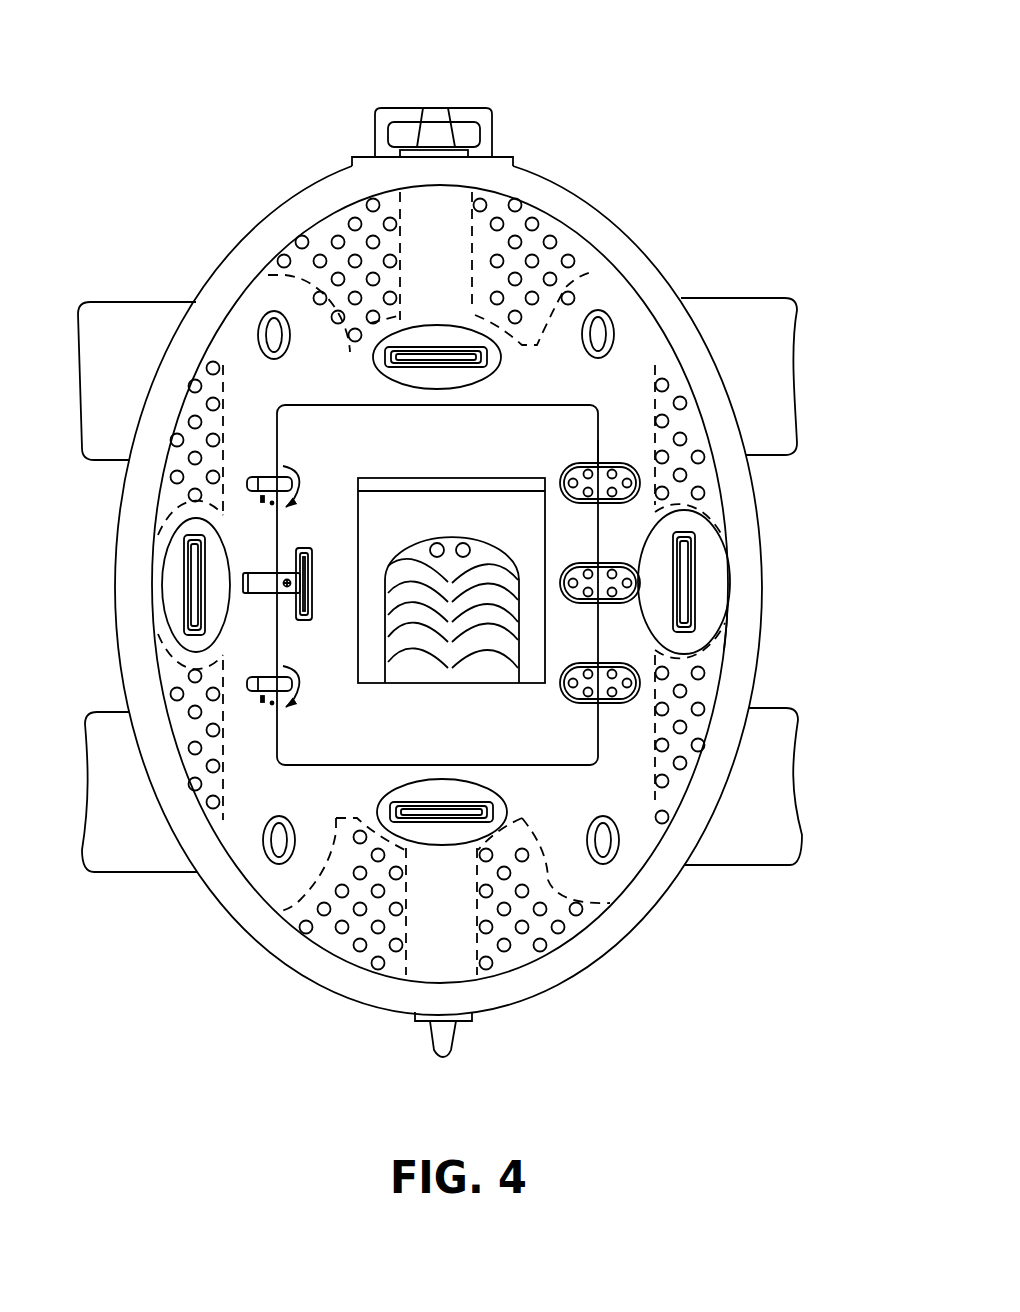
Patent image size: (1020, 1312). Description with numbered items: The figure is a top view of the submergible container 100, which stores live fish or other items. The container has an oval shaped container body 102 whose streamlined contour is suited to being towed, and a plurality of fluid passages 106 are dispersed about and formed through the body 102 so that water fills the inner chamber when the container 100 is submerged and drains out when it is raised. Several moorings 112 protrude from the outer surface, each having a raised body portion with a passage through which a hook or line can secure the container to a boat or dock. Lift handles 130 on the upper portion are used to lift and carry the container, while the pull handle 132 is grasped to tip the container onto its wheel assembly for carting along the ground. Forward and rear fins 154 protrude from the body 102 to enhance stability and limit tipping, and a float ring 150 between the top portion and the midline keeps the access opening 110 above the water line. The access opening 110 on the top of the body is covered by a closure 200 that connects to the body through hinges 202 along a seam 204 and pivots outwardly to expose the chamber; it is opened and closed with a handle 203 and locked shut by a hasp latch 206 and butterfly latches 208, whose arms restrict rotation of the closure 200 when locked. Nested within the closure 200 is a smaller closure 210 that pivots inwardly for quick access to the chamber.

The submergible container 100 is at (452, 511).
The container body 102 is at (543, 215).
The fluid passages 106 is at (355, 222).
The access opening 110 is at (575, 393).
The moorings 112 is at (437, 110).
The lift handles 130 is at (400, 350).
The pull handle 132 is at (405, 110).
The float ring 150 is at (742, 622).
The fins 154 is at (130, 300).
The closure 200 is at (605, 398).
The hinges 202 is at (637, 563).
The handle 203 is at (314, 576).
The seam 204 is at (598, 452).
The hasp latch 206 is at (270, 580).
The butterfly latches 208 is at (262, 474).
The nested closure 210 is at (450, 474).